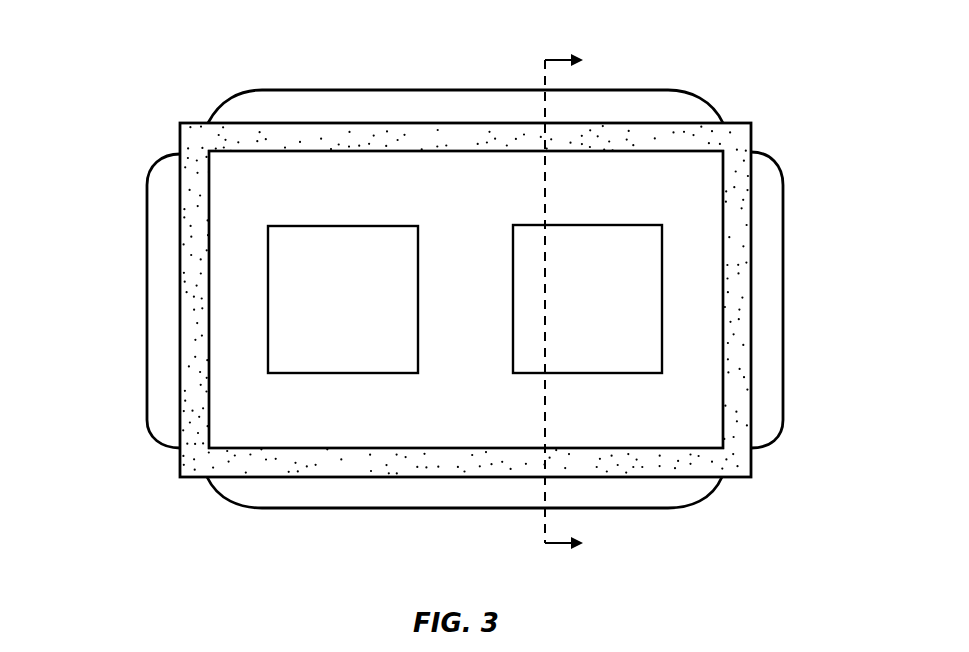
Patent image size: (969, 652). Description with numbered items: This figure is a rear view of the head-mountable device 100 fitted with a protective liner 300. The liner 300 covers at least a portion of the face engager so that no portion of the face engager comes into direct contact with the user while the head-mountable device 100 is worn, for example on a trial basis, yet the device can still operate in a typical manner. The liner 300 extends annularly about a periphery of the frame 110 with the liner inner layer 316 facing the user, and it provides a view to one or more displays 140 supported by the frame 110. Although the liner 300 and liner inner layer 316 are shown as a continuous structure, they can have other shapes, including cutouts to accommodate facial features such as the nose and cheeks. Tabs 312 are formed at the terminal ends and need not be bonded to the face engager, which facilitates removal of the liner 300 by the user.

The head-mountable device 100 is at (33, 108).
The liner 300 is at (188, 123).
The tabs 312 is at (657, 90).
The liner inner layer 316 is at (751, 143).
The frame 110 is at (465, 212).
The displays 140 is at (345, 226).